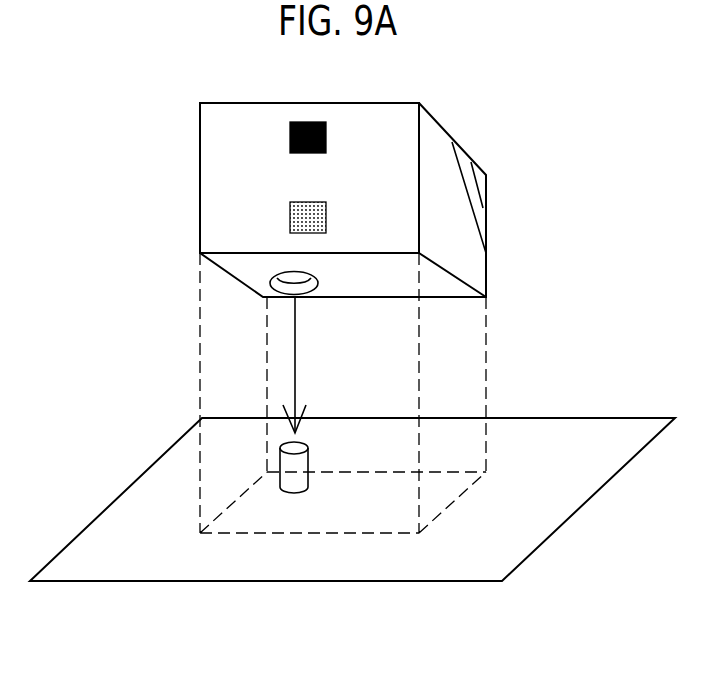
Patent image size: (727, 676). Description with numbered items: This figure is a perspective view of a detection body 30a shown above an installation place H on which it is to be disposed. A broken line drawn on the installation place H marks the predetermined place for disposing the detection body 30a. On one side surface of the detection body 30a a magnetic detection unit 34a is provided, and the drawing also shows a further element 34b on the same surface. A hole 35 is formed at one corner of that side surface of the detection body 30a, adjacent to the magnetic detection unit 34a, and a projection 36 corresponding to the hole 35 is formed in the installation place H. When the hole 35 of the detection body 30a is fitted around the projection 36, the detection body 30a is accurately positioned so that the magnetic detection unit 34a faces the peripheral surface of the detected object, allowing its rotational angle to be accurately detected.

The detection body 30a is at (464, 123).
The first window (black) 34b is at (290, 135).
The magnetic detection unit 34a is at (290, 218).
The hole 35 is at (268, 291).
The projection 36 is at (283, 468).
The installation place H is at (512, 525).